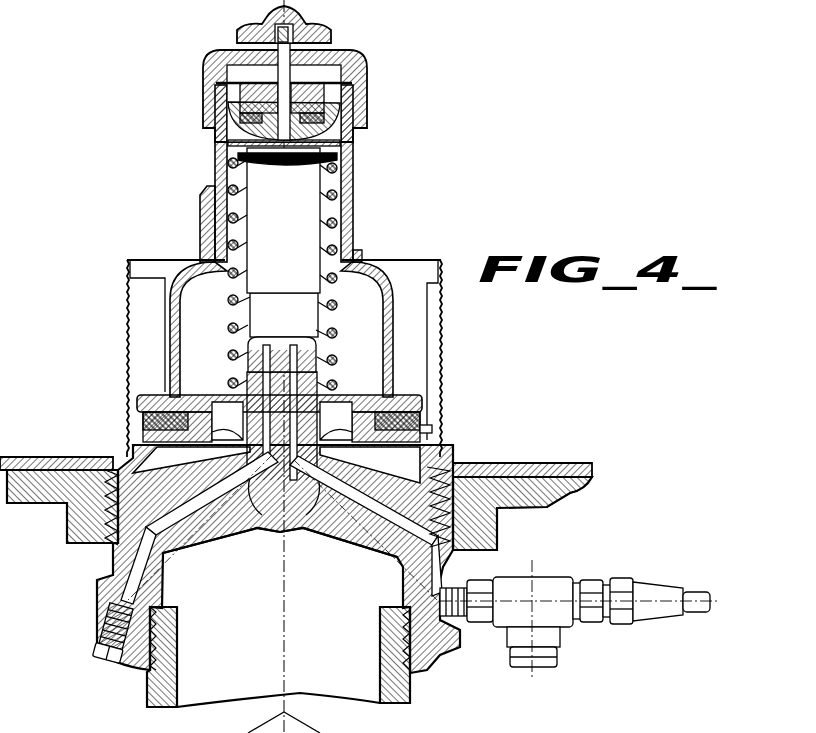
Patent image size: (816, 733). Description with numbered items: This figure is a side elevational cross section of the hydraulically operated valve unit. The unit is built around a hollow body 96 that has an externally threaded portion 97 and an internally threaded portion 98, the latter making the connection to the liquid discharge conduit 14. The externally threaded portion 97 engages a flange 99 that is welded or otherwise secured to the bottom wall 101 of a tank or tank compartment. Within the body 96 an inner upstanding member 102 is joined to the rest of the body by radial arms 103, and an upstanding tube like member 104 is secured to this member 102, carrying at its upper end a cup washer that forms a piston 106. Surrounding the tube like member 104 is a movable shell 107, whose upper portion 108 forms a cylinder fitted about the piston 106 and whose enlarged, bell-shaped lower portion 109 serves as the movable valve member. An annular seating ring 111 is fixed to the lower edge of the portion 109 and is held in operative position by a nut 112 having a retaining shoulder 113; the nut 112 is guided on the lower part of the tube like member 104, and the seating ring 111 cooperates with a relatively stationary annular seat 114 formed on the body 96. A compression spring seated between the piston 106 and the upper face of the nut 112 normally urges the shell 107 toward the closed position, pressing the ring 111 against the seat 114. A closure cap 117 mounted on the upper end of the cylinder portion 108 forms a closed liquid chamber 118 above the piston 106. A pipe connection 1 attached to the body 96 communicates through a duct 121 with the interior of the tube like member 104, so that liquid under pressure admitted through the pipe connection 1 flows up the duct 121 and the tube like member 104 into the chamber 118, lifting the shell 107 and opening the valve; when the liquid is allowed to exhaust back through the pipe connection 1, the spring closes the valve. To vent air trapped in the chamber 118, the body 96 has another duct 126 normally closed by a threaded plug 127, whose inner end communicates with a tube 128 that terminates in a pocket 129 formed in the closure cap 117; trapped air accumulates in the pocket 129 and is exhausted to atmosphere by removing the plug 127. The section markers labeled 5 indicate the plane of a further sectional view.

The pipe connection 1 is at (703, 610).
The section line 5 is at (288, 434).
The liquid discharge conduit 14 is at (155, 703).
The hollow body 96 is at (443, 467).
The externally threaded portion 97 is at (453, 515).
The internally threaded portion 98 is at (418, 662).
The flange 99 is at (540, 505).
The bottom wall 101 is at (570, 459).
The inner upstanding member 102 is at (308, 423).
The radial arms 103 is at (237, 531).
The tube like member 104 is at (310, 200).
The piston 106 is at (354, 145).
The movable shell 107 is at (200, 216).
The cylinder forming portion 108 is at (215, 165).
The lower portion 109 is at (172, 331).
The annular seating ring 111 is at (140, 402).
The nut 112 is at (200, 394).
The retaining shoulder 113 is at (163, 437).
The annular seat 114 is at (440, 432).
The closure cap 117 is at (360, 92).
The liquid chamber 118 is at (330, 72).
The duct 121 is at (379, 552).
The duct 126 is at (175, 551).
The threaded plug 127 is at (98, 652).
The tube 128 is at (262, 350).
The pocket 129 is at (300, 26).